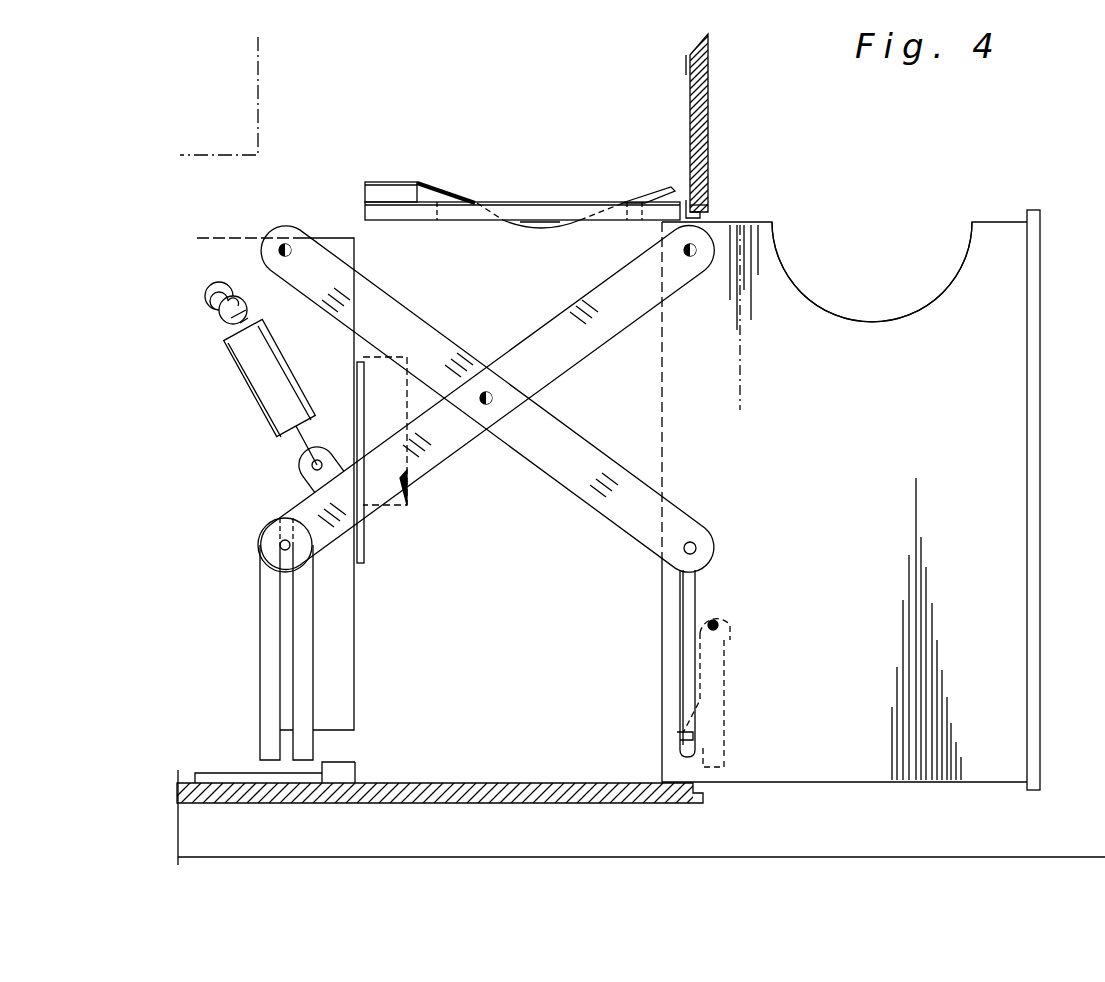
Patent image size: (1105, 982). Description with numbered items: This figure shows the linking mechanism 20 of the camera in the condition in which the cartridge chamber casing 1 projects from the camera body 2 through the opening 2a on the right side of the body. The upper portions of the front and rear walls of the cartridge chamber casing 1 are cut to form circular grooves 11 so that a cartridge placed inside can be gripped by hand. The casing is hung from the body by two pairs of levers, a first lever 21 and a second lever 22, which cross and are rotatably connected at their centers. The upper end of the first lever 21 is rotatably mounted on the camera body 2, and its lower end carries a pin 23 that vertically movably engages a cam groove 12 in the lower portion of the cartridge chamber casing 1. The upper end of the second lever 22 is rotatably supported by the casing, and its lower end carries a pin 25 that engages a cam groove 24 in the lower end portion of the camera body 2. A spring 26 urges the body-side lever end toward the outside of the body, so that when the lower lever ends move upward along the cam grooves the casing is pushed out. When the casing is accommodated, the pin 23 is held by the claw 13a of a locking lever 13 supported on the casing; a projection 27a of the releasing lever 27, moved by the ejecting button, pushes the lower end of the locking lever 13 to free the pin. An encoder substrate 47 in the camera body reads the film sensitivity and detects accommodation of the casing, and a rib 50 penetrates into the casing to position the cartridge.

The cartridge chamber casing 1 is at (1044, 427).
The camera body 2 is at (712, 114).
The opening 2a is at (700, 218).
The circular grooves 11 is at (874, 318).
The cam groove 12 is at (686, 626).
The locking lever 13 is at (715, 672).
The claw 13a is at (685, 733).
The linking mechanism 20 is at (433, 278).
The first lever 21 is at (320, 235).
The second lever 22 is at (455, 437).
The pin 23 is at (698, 549).
The cam groove 24 is at (296, 620).
The pin 25 is at (280, 547).
The spring 26 is at (228, 360).
The releasing lever 27 is at (288, 805).
The projection 27a is at (337, 775).
The encoder substrate 47 is at (365, 553).
The rib 50 is at (400, 470).